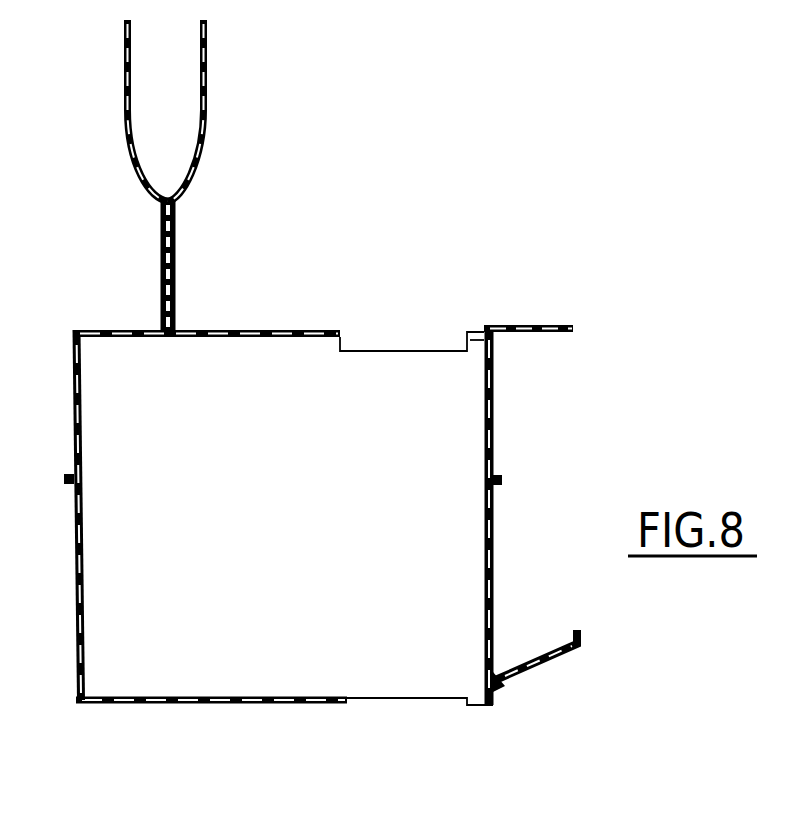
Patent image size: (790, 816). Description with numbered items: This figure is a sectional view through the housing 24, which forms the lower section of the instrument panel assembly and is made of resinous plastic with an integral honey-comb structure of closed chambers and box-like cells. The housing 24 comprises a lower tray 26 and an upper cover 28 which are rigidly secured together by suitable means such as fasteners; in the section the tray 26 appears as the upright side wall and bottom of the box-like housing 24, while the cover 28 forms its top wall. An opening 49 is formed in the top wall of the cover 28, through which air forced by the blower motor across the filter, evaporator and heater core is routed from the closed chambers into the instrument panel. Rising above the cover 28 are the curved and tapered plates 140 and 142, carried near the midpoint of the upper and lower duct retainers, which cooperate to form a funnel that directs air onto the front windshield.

The housing 24 is at (73, 680).
The lower tray 26 is at (72, 566).
The upper cover 28 is at (290, 331).
The opening 49 is at (421, 351).
The curved and tapered plate 140 is at (124, 112).
The curved and tapered plate 142 is at (206, 124).